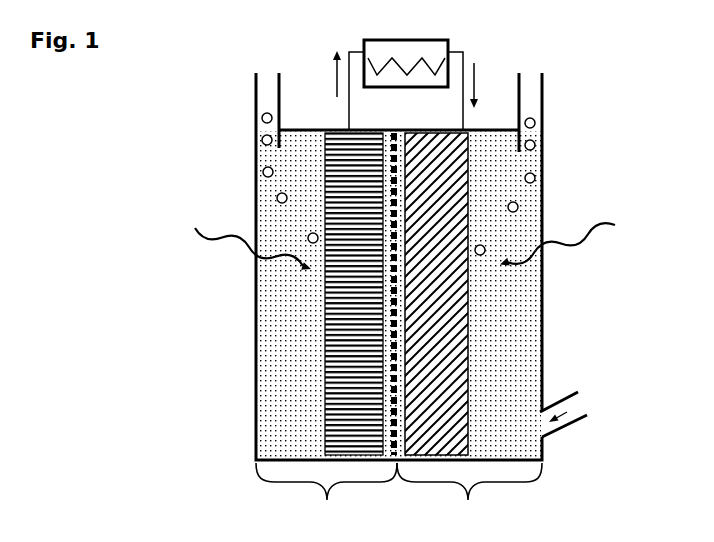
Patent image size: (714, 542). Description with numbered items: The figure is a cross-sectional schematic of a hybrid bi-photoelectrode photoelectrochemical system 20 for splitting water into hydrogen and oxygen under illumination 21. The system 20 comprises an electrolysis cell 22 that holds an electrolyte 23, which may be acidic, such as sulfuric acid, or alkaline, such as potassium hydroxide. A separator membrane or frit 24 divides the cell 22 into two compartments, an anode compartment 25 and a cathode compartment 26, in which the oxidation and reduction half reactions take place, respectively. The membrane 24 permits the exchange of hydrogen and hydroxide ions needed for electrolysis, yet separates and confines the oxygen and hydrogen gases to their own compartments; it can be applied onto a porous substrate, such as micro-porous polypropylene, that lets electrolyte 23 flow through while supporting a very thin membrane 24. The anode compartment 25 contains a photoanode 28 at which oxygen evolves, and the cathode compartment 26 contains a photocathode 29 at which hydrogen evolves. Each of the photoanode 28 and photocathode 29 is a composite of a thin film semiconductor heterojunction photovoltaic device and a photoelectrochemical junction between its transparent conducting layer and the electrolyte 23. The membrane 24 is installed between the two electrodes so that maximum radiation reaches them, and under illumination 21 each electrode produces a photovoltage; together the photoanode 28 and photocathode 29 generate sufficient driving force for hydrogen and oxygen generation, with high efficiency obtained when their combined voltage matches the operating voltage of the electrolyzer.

The PEC system 20 is at (185, 38).
The illumination 21 is at (567, 248).
The electrolysis cell 22 is at (545, 173).
The electrolyte 23 is at (525, 217).
The separator membrane 24 is at (396, 398).
The anode compartment 25 is at (326, 499).
The cathode compartment 26 is at (469, 499).
The photoanode 28 is at (327, 325).
The photocathode 29 is at (468, 375).